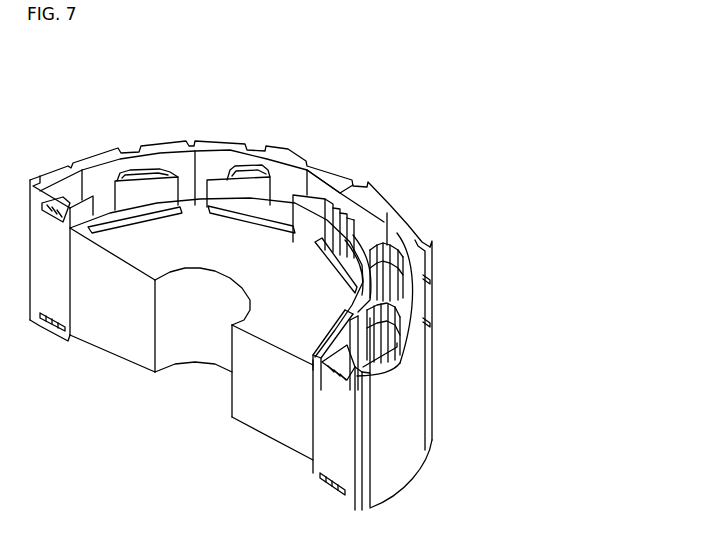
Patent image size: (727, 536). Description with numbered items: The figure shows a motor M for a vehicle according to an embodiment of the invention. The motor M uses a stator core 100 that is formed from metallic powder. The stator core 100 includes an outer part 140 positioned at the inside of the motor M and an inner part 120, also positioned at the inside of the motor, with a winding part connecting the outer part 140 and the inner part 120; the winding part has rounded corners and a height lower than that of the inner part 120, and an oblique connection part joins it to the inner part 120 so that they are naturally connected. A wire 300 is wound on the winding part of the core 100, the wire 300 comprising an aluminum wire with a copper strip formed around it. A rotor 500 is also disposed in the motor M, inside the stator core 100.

The stator core 100 is at (366, 171).
The inner part 120 is at (303, 212).
The outer part 140 is at (327, 173).
The wire 300 is at (390, 247).
The rotor 500 is at (253, 406).
The motor M is at (450, 167).